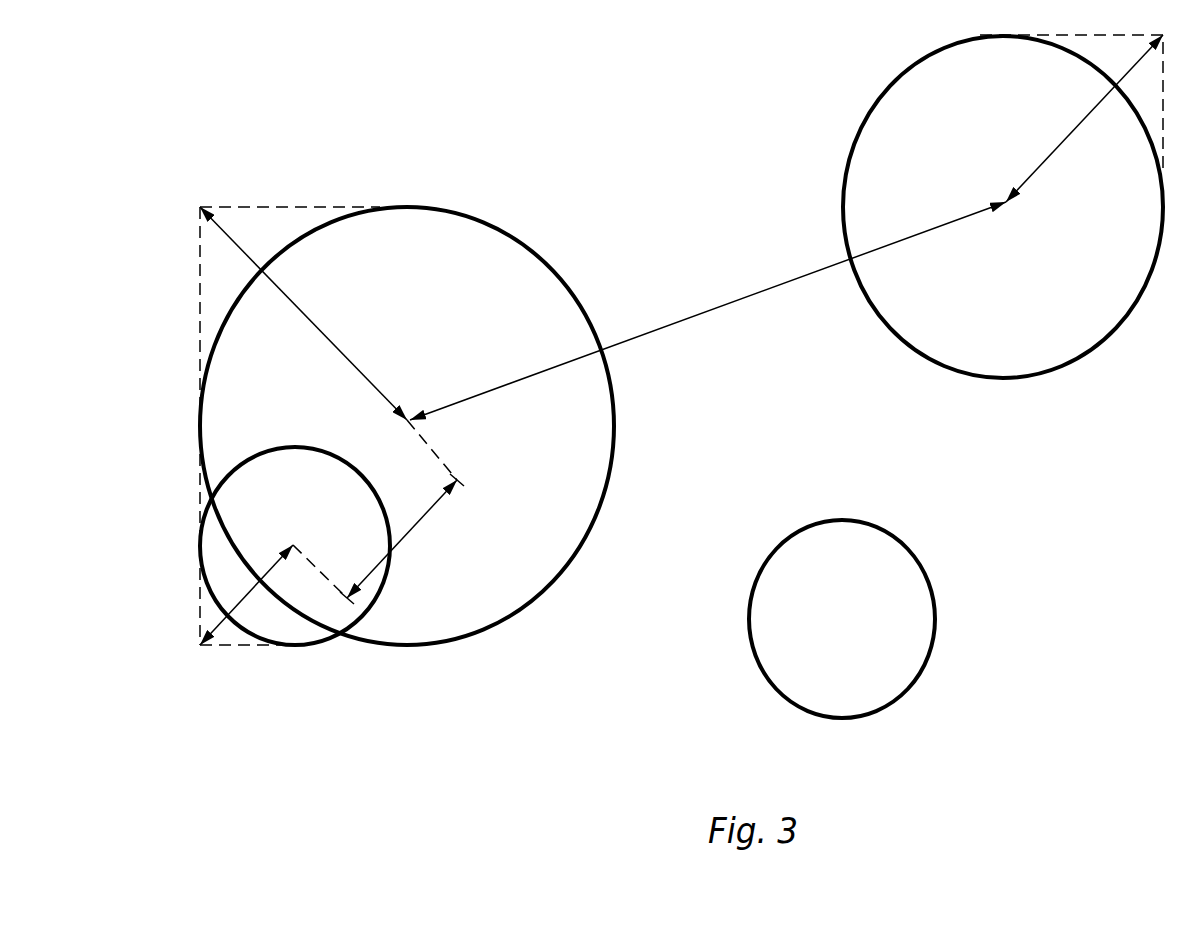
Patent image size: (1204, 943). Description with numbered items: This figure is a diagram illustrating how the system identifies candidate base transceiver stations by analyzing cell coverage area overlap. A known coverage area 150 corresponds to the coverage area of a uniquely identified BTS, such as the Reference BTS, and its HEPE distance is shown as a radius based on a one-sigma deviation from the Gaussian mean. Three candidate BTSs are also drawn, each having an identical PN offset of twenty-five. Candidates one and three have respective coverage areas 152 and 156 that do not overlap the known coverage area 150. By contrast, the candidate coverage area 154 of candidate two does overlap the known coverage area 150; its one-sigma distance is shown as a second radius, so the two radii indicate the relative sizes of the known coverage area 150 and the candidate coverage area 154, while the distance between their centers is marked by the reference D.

The known coverage area 150 is at (543, 263).
The coverage area of PN 25 candidate 1 152 is at (1052, 373).
The candidate coverage area 154 is at (308, 647).
The coverage area of PN 25 candidate 3 156 is at (852, 720).